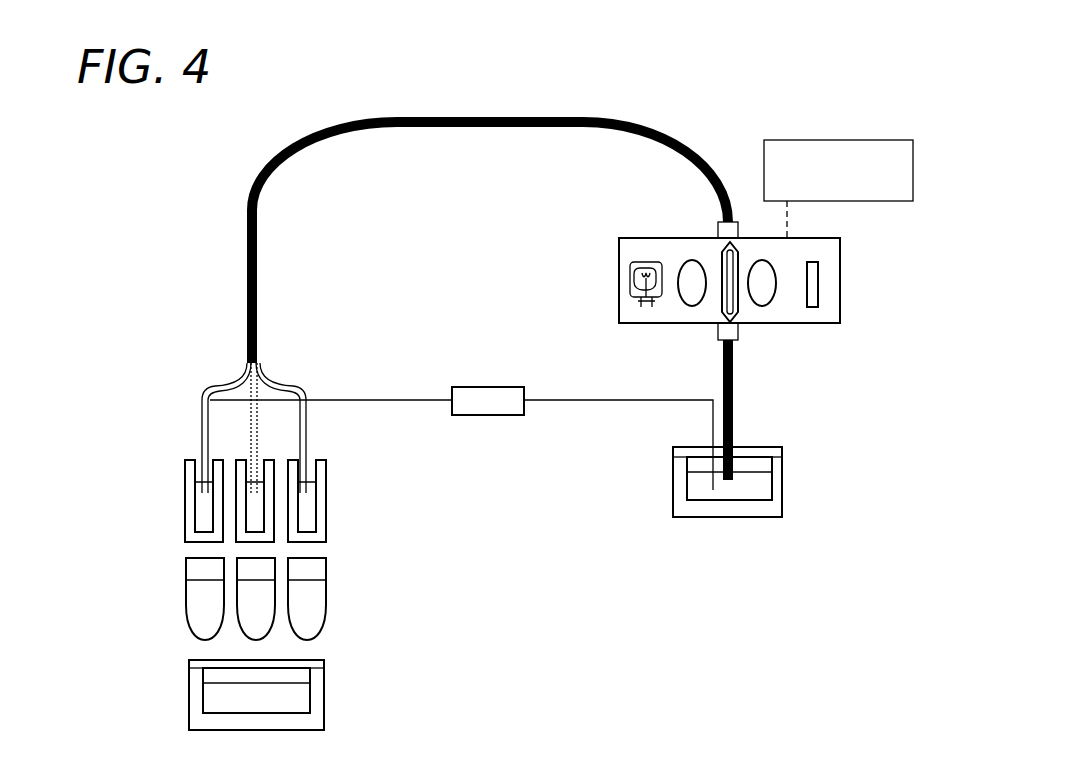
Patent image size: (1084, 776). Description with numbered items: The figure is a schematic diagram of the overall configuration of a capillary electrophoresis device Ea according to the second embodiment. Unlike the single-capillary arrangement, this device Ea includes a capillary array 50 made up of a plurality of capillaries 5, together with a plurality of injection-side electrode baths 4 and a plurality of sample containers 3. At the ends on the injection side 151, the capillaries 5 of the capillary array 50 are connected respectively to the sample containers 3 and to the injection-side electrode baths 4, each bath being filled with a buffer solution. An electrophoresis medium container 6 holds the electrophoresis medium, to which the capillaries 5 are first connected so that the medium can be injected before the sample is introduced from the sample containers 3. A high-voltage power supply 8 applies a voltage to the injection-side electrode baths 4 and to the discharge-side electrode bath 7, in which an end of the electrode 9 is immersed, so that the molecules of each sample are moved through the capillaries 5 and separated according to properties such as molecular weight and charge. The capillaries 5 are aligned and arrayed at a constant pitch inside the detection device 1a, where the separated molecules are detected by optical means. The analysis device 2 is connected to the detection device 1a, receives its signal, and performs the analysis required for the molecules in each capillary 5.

The capillary electrophoresis device Ea is at (720, 107).
The capillary array 50 is at (247, 214).
The analysis device 2 is at (826, 140).
The detection device 1a is at (619, 280).
The capillary 5 is at (207, 390).
The electrode 9 is at (368, 400).
The high-voltage power supply 8 is at (478, 387).
The discharge-side electrode bath 7 is at (782, 492).
The injection side 151 is at (166, 443).
The injection-side electrode bath 4 is at (185, 487).
The sample container 3 is at (186, 590).
The electrophoresis medium container 6 is at (189, 698).